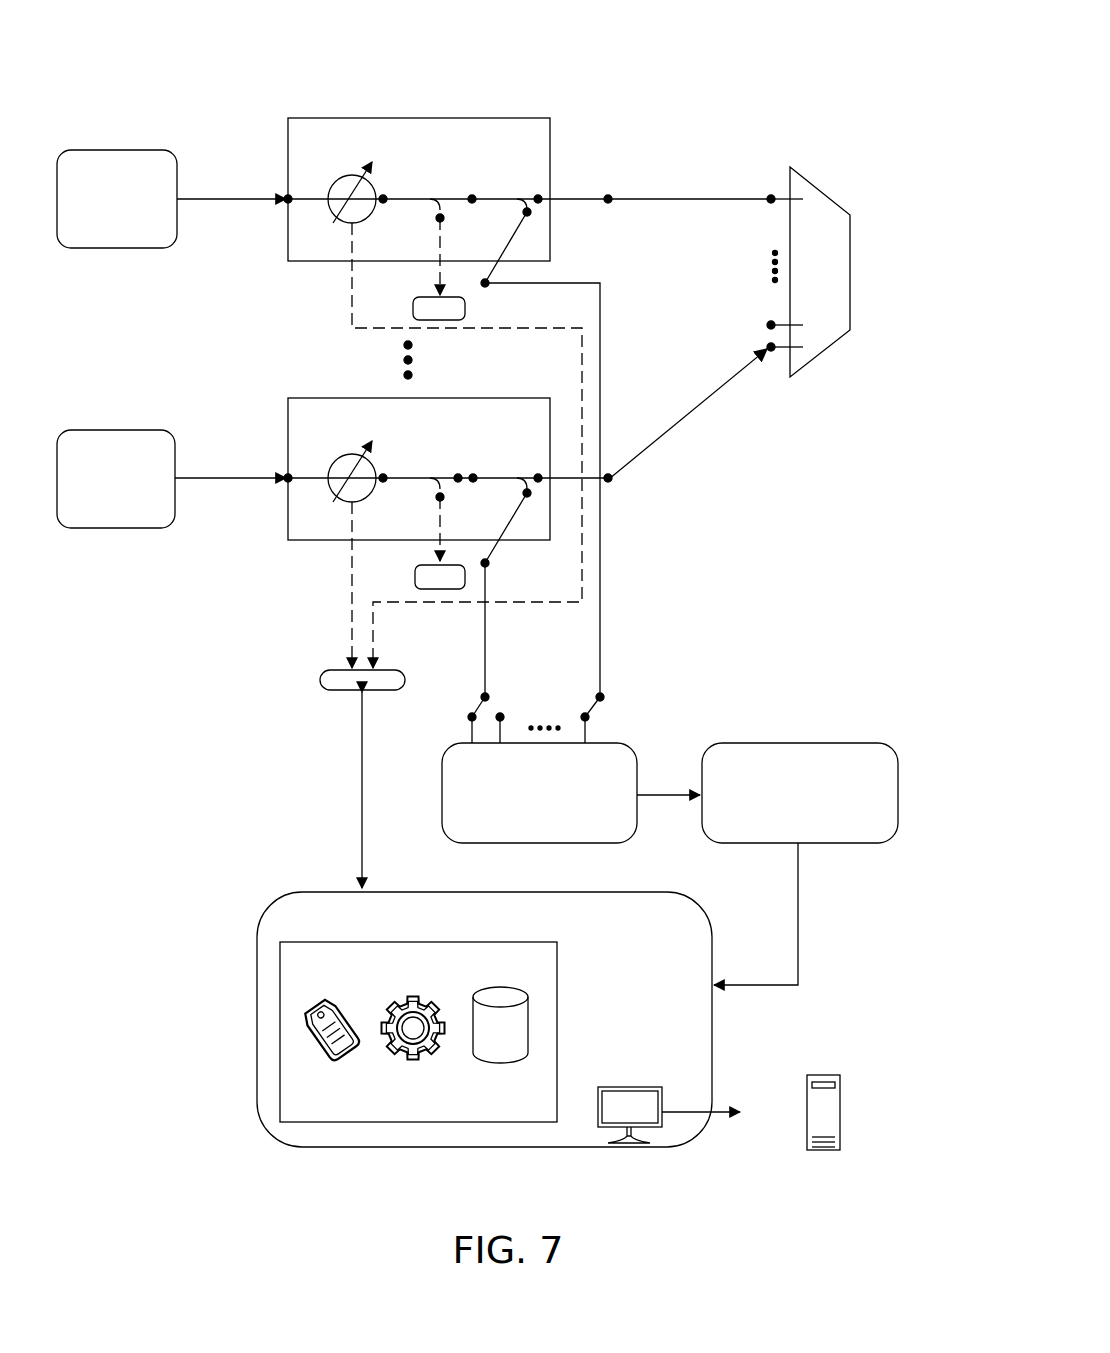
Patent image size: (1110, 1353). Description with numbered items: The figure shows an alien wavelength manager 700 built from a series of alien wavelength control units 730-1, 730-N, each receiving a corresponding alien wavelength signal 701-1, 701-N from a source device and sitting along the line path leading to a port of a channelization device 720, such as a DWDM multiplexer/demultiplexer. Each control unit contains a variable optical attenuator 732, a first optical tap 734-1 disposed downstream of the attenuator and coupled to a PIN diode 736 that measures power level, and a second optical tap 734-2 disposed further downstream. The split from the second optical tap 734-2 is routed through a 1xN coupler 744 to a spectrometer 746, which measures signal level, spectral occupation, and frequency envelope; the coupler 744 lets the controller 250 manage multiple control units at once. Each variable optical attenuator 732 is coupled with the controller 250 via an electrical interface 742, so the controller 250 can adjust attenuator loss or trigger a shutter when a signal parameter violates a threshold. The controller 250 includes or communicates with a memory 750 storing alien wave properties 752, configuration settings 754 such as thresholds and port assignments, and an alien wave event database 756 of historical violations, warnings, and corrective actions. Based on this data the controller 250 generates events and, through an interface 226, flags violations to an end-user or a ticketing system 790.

The alien wavelength manager 700 is at (697, 43).
The alien wavelength signal 701-1 is at (117, 199).
The alien wavelength signal 701-N is at (116, 479).
The alien wavelength control unit 730-1 is at (489, 186).
The alien wavelength control unit 730-N is at (300, 396).
The variable optical attenuator 732 is at (340, 175).
The first optical tap 734-1 is at (440, 185).
The second optical tap 734-2 is at (486, 188).
The PIN diode 736 is at (430, 297).
The channelization device 720 is at (798, 170).
The electrical interface 742 is at (320, 675).
The coupler 744 is at (539, 768).
The spectrometer 746 is at (800, 793).
The controller 250 is at (484, 1019).
The memory 750 is at (453, 1032).
The alien wave properties 752 is at (330, 1000).
The configuration settings 754 is at (415, 998).
The alien wave event database 756 is at (530, 1027).
The interface 226 is at (612, 1087).
The ticketing system 790 is at (820, 1075).